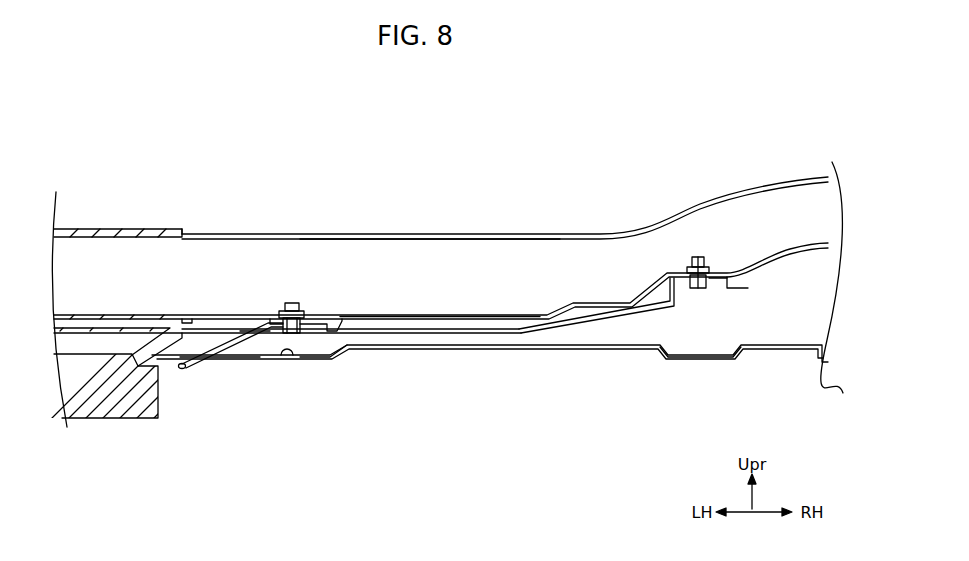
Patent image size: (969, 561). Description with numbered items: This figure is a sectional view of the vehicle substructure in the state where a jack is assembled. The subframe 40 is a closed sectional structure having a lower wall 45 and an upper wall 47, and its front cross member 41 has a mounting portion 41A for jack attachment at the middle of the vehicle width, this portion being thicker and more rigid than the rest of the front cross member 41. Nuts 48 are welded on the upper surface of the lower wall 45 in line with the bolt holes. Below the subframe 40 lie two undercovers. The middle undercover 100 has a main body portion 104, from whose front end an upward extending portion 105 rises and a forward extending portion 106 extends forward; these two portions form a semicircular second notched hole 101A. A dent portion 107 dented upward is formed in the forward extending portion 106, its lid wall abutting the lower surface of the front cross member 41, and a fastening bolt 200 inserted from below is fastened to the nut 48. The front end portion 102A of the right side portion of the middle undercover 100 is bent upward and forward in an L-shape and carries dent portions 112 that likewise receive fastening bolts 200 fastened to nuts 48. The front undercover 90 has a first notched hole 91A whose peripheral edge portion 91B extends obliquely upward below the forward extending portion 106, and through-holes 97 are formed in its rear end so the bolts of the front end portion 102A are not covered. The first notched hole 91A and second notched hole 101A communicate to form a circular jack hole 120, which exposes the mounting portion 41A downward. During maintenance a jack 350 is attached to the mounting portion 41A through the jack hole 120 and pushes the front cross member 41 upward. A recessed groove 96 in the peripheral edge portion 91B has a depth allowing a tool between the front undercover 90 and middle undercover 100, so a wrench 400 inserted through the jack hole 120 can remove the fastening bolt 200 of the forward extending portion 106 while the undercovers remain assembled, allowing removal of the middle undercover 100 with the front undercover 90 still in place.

The subframe 40 is at (505, 193).
The front cross member 41 is at (412, 191).
The mounting portion 41A is at (112, 228).
The upper wall 47 is at (422, 241).
The lower wall 45 is at (458, 315).
The main body portion 104 is at (391, 317).
The front end portion 102A is at (522, 326).
The second notched hole 101A is at (220, 320).
The middle undercover 100 is at (519, 341).
The forward extending portion 106 is at (253, 330).
The jack hole 120 is at (95, 342).
The jack 350 is at (97, 419).
The front undercover 90 is at (469, 358).
The first notched hole 91A is at (232, 359).
The peripheral edge portion 91B is at (345, 352).
The through-holes 97 is at (686, 358).
The upward extending portion 105 is at (323, 333).
The recessed groove 96 is at (287, 353).
The wrench 400 is at (186, 369).
The fastening bolt 200 is at (290, 303).
The nut 48 is at (279, 314).
The dent portion 107 is at (312, 320).
The dent portions 112 is at (718, 289).